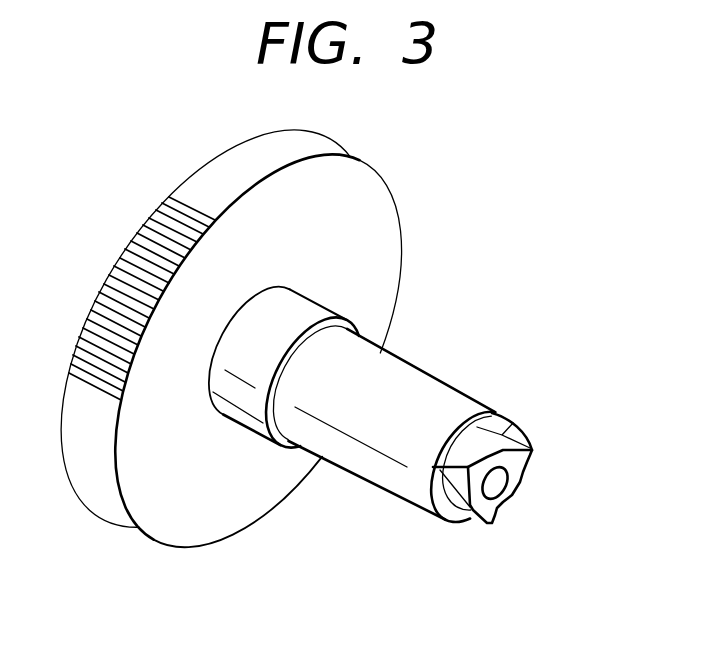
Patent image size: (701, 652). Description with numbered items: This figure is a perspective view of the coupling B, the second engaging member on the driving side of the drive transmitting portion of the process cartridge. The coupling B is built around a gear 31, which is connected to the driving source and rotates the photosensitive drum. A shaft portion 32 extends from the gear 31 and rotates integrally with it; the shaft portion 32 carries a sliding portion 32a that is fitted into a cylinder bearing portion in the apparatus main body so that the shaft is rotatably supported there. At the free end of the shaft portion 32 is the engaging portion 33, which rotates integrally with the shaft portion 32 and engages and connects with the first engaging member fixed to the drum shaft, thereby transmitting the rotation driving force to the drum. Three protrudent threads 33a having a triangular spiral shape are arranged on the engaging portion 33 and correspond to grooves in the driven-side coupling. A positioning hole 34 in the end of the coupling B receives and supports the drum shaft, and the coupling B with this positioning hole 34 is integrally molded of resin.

The coupling B is at (381, 164).
The gear 31 is at (148, 247).
The shaft portion 32 is at (405, 377).
The sliding portion 32a is at (297, 307).
The engaging portion 33 is at (510, 435).
The protrudent threads 33a is at (532, 452).
The positioning hole 34 is at (500, 485).